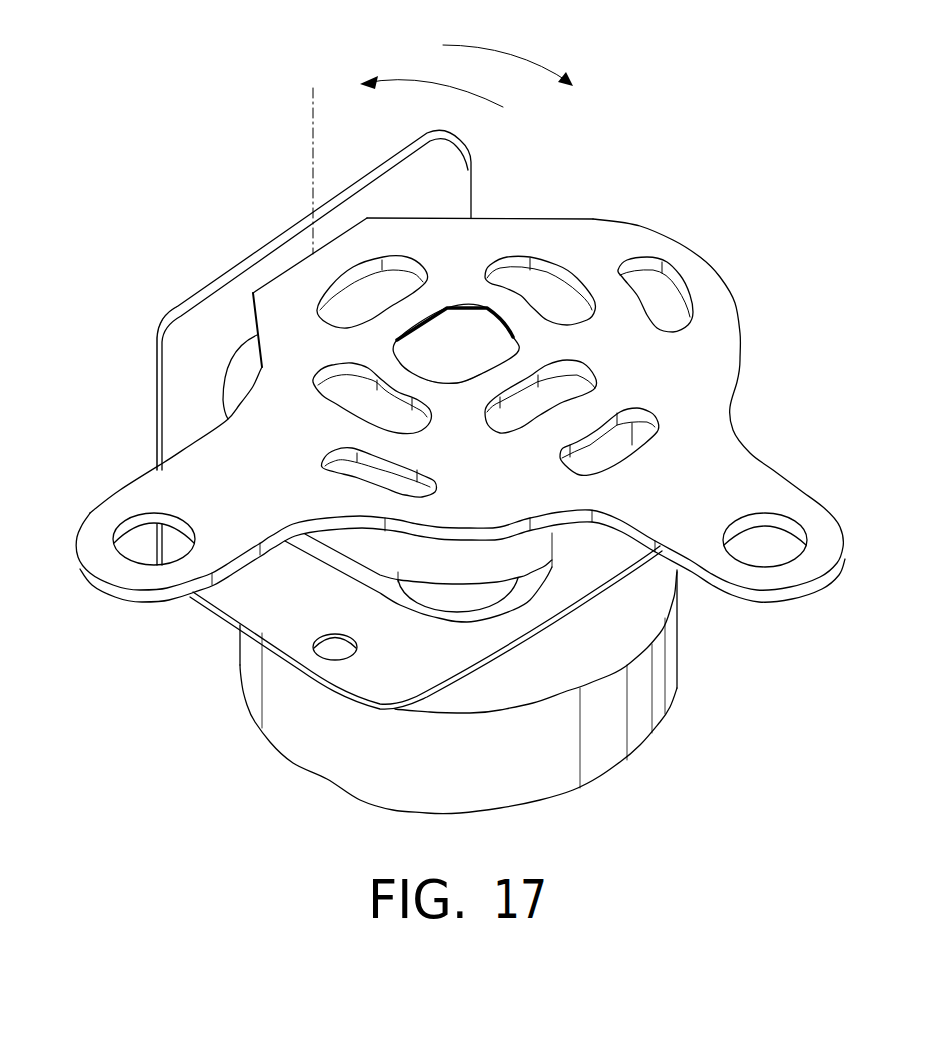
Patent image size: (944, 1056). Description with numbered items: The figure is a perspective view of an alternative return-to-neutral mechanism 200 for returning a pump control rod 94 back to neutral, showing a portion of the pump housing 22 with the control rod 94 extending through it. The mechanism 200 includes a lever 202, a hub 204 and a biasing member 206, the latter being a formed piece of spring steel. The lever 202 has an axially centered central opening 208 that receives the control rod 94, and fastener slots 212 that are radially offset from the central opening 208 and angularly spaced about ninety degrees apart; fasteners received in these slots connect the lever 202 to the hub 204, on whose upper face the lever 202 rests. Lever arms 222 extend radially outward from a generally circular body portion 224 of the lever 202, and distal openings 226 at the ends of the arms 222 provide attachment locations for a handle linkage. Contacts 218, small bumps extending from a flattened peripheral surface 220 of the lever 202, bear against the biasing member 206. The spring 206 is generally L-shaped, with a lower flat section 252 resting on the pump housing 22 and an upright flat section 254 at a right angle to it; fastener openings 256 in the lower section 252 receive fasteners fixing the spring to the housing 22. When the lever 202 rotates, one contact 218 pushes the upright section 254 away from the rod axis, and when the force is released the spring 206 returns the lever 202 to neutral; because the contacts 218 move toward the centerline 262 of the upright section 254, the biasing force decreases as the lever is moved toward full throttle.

The return-to-neutral mechanism 200 is at (640, 172).
The lever 202 is at (497, 237).
The hub 204 is at (563, 553).
The biasing member 206 is at (217, 603).
The central opening 208 is at (523, 350).
The fastener slots 212 is at (397, 277).
The contacts 218 is at (368, 218).
The flattened peripheral surface 220 is at (307, 257).
The lever arms 222 is at (145, 483).
The circular body portion 224 is at (703, 287).
The distal openings 226 is at (127, 523).
The first generally flat section 252 is at (390, 680).
The second generally flat section 254 is at (172, 382).
The fastener openings 256 is at (337, 637).
The centerline 262 is at (311, 104).
The control rod 94 is at (463, 367).
The pump housing 22 is at (275, 735).